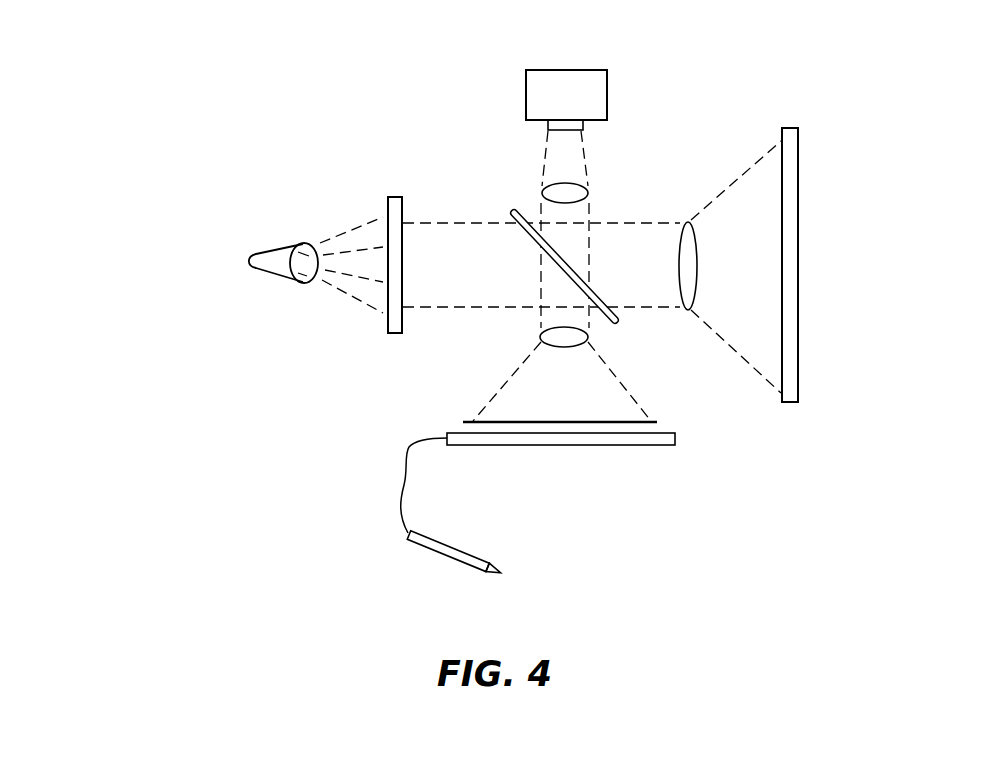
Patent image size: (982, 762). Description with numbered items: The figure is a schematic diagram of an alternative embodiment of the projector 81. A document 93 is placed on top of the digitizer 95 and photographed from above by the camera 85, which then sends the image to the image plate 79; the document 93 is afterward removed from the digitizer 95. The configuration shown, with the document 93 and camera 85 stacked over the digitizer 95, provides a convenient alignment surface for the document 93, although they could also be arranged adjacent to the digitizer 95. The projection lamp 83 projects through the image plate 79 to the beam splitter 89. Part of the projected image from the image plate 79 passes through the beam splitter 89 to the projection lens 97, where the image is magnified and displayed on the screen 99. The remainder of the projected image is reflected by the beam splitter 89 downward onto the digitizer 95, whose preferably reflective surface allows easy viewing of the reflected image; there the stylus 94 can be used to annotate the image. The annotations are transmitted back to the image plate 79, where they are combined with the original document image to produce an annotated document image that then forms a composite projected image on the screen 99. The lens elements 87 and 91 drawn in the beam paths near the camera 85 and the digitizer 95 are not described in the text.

The image plate 79 is at (393, 197).
The projector 81 is at (348, 553).
The projection lamp 83 is at (282, 278).
The camera 85 is at (582, 70).
The lens 87 is at (581, 190).
The beam splitter 89 is at (593, 296).
The lens 91 is at (540, 338).
The document 93 is at (548, 423).
The stylus 94 is at (465, 551).
The digitizer 95 is at (647, 447).
The projection lens 97 is at (683, 229).
The screen 99 is at (798, 252).